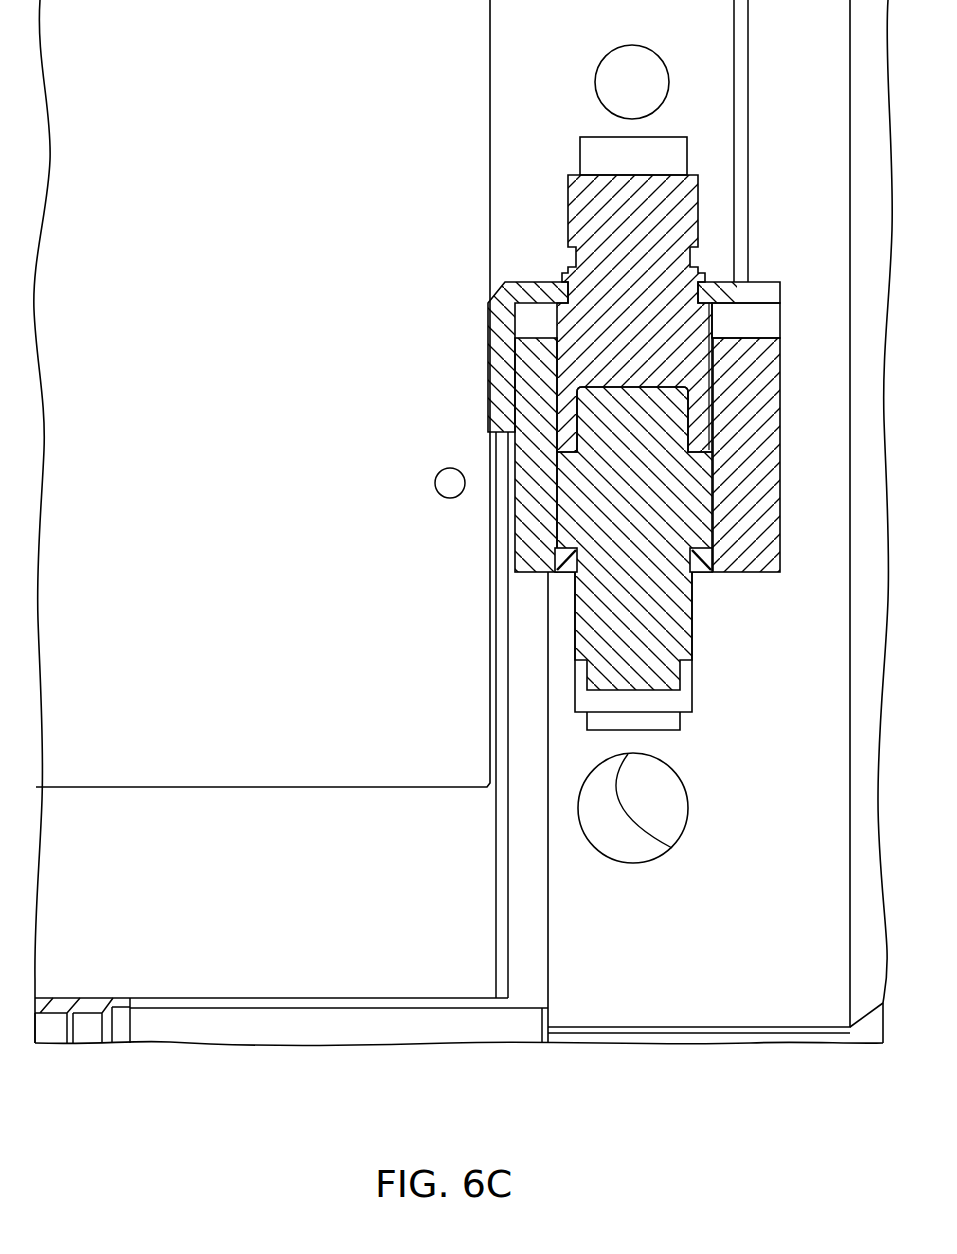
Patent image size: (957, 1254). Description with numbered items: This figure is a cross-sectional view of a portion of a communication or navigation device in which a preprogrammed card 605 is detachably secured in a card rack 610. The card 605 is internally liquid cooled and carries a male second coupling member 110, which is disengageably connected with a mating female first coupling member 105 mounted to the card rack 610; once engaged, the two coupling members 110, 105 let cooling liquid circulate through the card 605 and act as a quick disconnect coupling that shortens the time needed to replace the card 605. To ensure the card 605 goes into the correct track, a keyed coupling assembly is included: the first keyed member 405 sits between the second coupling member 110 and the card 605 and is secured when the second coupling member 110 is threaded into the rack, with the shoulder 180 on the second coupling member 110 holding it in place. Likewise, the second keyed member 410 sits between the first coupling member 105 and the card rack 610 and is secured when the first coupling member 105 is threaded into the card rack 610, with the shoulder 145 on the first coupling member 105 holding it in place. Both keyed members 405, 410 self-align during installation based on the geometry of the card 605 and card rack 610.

The second coupling member 110 is at (663, 224).
The first coupling member 105 is at (602, 503).
The first keyed member 405 is at (537, 290).
The second keyed member 410 is at (768, 477).
The shoulder 180 is at (715, 340).
The shoulder 145 is at (707, 560).
The preprogrammed communication or navigation card 605 is at (270, 407).
The card rack 610 is at (793, 825).